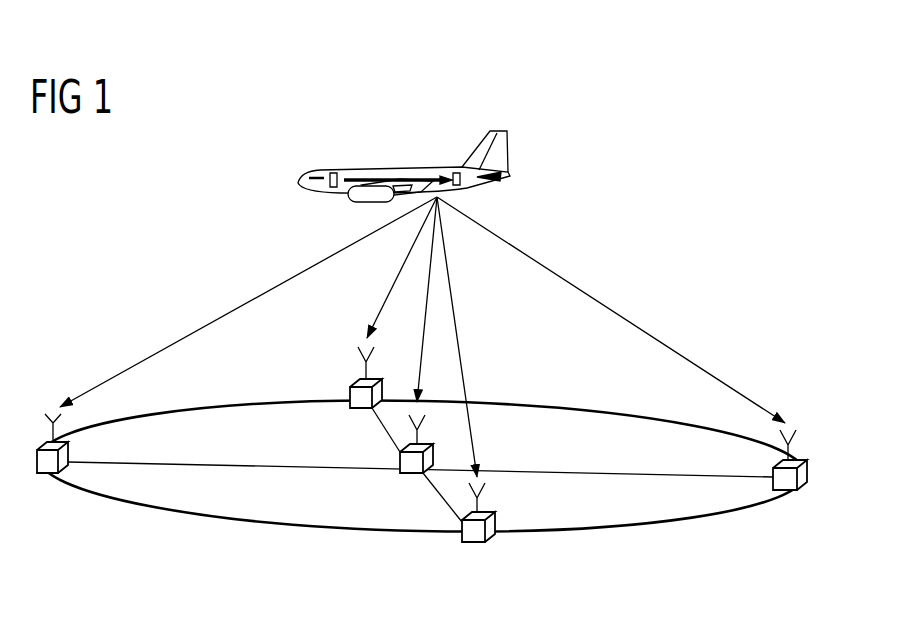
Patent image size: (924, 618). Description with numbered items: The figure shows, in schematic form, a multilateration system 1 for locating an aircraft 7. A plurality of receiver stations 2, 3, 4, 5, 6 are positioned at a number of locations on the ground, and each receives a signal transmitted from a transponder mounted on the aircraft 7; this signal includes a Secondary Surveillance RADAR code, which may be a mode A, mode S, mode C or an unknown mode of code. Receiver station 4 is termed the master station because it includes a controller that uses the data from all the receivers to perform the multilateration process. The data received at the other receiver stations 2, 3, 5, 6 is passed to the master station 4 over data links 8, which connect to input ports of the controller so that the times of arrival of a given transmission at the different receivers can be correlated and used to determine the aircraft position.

The multilateration system 1 is at (628, 538).
The receiver station 2 is at (50, 474).
The receiver station 3 is at (350, 392).
The master station 4 is at (412, 474).
The receiver station 5 is at (475, 543).
The receiver station 6 is at (787, 491).
The aircraft 7 is at (358, 174).
The data links 8 is at (387, 430).